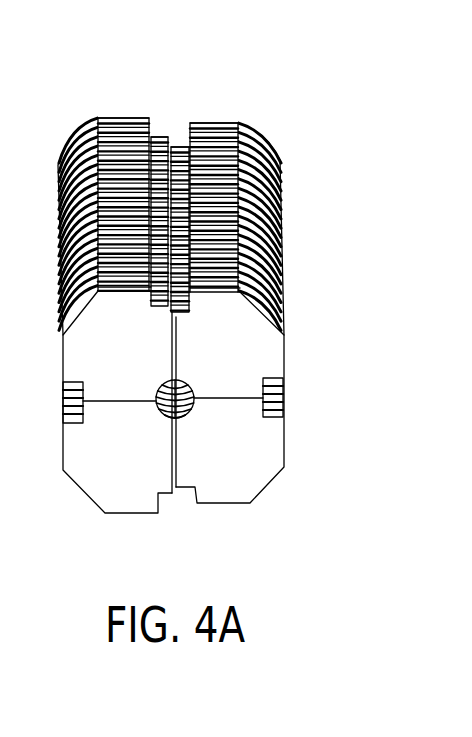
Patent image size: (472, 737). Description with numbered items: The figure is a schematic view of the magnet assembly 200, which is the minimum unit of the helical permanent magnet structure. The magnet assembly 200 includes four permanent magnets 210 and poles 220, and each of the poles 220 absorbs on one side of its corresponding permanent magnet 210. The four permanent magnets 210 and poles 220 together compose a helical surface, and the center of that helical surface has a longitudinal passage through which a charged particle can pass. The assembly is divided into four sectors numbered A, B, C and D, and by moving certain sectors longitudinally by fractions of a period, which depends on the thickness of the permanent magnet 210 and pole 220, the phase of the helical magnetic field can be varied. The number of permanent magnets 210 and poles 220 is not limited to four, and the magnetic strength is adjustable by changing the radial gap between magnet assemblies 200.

The magnet assembly 200 is at (196, 70).
The permanent magnet 210 is at (213, 127).
The pole 220 is at (258, 140).